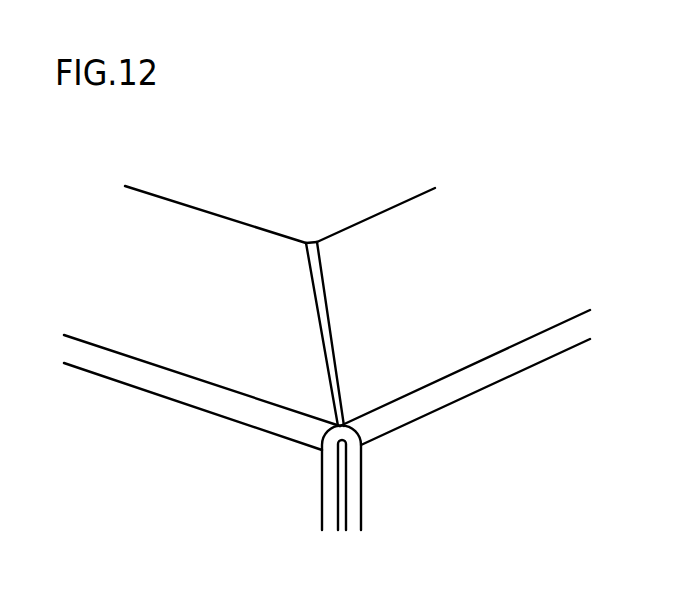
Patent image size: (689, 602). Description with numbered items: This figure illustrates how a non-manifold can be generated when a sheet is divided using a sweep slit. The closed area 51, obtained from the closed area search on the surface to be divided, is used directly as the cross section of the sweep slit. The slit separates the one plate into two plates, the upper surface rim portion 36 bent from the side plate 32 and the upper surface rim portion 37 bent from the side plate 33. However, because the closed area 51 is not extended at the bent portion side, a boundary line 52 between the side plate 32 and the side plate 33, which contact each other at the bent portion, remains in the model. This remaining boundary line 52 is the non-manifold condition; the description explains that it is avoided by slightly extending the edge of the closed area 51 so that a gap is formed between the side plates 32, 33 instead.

The upper surface rim portion 36 is at (193, 304).
The upper surface rim portion 37 is at (438, 310).
The side plate 32 is at (167, 470).
The side plate 33 is at (504, 483).
The closed area 51 is at (320, 260).
The boundary line 52 is at (343, 440).